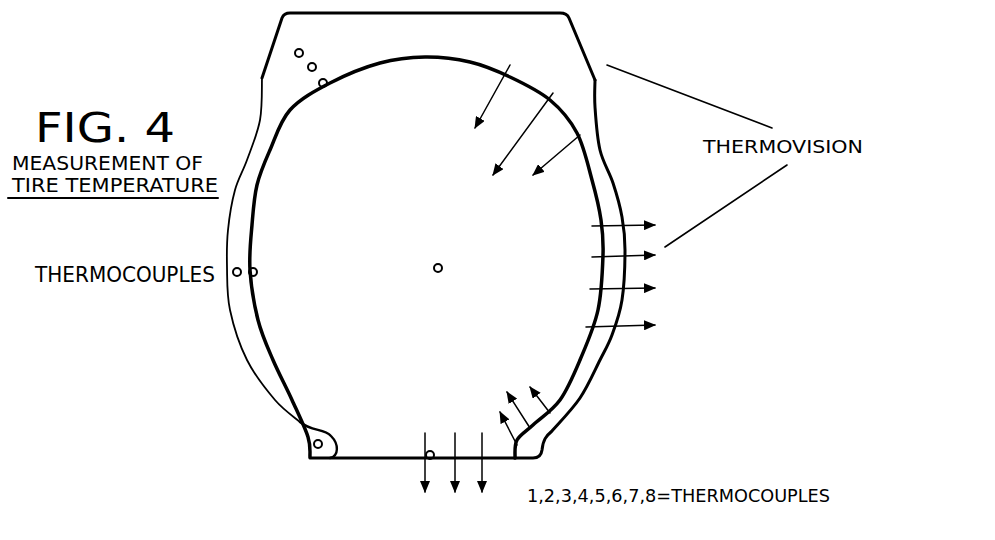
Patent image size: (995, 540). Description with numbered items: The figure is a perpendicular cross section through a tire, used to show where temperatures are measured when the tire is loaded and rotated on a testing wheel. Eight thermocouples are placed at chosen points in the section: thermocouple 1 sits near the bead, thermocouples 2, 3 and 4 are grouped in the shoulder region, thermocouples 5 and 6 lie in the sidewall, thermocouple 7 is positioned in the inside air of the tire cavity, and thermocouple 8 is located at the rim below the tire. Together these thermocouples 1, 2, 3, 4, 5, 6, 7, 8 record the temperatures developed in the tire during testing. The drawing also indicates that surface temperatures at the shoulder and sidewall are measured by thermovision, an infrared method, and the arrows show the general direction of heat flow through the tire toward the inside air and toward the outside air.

The thermocouple 1 is at (313, 444).
The thermocouple 2 is at (327, 84).
The thermocouple 3 is at (315, 64).
The thermocouple 4 is at (302, 50).
The thermocouple 5 is at (256, 268).
The thermocouple 6 is at (239, 268).
The thermocouple 7 is at (436, 264).
The thermocouple 8 is at (432, 450).